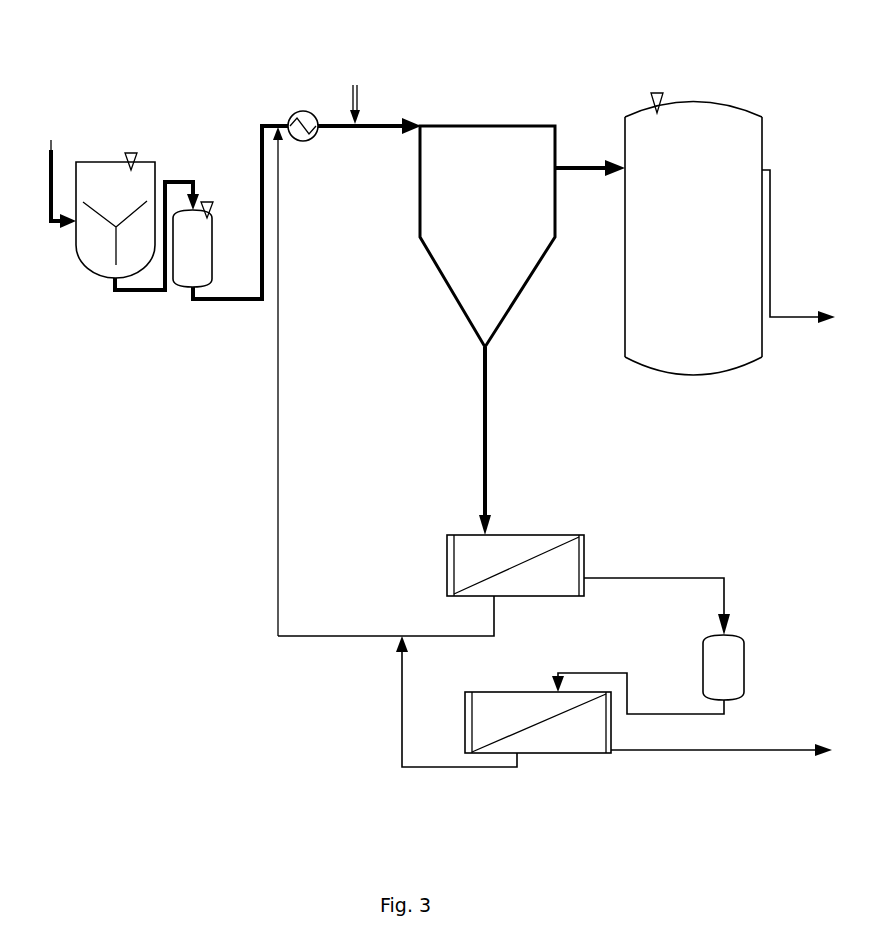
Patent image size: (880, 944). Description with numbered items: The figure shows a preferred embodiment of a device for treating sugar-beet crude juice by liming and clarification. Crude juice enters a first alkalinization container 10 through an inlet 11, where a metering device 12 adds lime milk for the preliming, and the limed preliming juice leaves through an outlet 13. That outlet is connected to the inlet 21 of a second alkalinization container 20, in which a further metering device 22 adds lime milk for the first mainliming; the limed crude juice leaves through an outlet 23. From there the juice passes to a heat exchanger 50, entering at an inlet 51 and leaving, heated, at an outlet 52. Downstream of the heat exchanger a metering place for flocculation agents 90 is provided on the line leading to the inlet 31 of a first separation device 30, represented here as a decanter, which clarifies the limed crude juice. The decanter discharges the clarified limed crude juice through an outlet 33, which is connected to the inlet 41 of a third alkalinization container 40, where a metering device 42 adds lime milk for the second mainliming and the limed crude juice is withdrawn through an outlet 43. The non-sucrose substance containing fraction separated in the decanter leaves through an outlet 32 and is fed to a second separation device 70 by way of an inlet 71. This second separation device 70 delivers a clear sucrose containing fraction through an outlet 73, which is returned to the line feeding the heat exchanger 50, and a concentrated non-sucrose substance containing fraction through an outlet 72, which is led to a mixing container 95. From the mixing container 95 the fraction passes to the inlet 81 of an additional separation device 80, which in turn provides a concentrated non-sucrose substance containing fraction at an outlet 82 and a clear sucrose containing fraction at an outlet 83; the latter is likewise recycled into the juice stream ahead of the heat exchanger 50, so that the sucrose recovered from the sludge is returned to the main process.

The first alkalinization container 10 is at (102, 177).
The inlet 11 is at (53, 224).
The metering device 12 is at (133, 152).
The outlet 13 is at (115, 295).
The second alkalinization container 20 is at (180, 270).
The inlet 21 is at (196, 198).
The metering device 22 is at (208, 200).
The outlet 23 is at (192, 300).
The separation device 30 is at (482, 145).
The inlet 31 is at (421, 125).
The outlet 32 is at (482, 358).
The outlet 33 is at (558, 150).
The third alkalinization container 40 is at (725, 143).
The inlet 41 is at (620, 174).
The metering device 42 is at (660, 90).
The outlet 43 is at (772, 167).
The heat exchanger 50 is at (304, 111).
The inlet 51 is at (289, 124).
The outlet 52 is at (320, 124).
The second separation device 70 is at (527, 545).
The inlet 71 is at (486, 510).
The outlet 72 is at (586, 572).
The outlet 73 is at (490, 600).
The additional separation device 80 is at (507, 697).
The inlet 81 is at (566, 672).
The outlet 82 is at (613, 754).
The outlet 83 is at (518, 760).
The metering place for flocculation agents 90 is at (360, 100).
The mixing container 95 is at (735, 642).